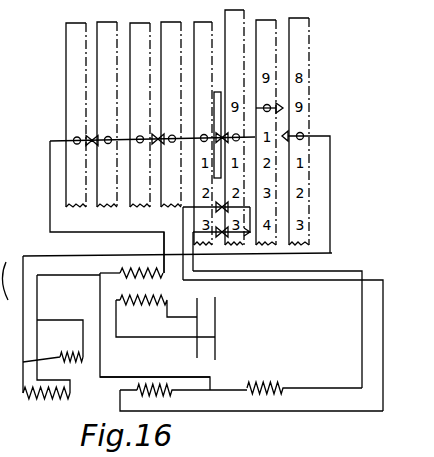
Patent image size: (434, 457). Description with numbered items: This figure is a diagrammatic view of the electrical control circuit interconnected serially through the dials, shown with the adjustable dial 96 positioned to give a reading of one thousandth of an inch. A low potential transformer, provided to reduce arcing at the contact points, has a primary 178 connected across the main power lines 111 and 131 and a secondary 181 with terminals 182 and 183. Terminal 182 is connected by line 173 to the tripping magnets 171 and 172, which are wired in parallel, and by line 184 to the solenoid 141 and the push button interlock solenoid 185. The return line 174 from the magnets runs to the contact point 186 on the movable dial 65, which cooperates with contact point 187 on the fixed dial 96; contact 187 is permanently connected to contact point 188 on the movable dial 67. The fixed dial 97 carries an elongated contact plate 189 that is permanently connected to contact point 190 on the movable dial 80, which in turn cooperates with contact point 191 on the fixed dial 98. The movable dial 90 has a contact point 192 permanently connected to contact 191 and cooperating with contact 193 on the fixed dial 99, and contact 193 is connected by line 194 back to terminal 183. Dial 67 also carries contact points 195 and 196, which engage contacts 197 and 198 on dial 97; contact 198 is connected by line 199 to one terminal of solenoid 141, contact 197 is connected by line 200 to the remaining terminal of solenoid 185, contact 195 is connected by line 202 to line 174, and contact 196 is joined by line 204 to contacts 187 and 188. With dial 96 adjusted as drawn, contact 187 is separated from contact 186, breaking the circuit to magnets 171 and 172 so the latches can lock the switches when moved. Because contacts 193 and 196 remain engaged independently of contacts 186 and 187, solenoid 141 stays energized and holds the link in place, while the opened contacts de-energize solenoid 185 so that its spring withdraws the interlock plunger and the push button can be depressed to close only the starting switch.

The fixed dial 99 is at (77, 28).
The movable dial 90 is at (108, 28).
The fixed dial 98 is at (141, 28).
The movable dial 80 is at (173, 28).
The fixed dial 97 is at (204, 28).
The movable dial 67 is at (234, 17).
The fixed dial 96 is at (259, 26).
The movable dial 65 is at (306, 18).
The contact 193 is at (92, 137).
The contact point 192 is at (109, 136).
The contact point 191 is at (158, 136).
The contact point 190 is at (158, 142).
The elongated contact plate 189 is at (215, 113).
The contact point 188 is at (232, 134).
The contact point 187 is at (283, 107).
The contact point 186 is at (287, 133).
The line 194 is at (50, 179).
The contact 197 is at (215, 207).
The contact point 195 is at (224, 203).
The line 204 is at (251, 211).
The contact point 198 is at (220, 236).
The contact point 196 is at (228, 238).
The line 202 is at (252, 244).
The return line 174 is at (65, 256).
The terminal 182 is at (100, 273).
The secondary 181 is at (140, 276).
The terminal 183 is at (165, 276).
The line 173 is at (38, 298).
The tripping magnet 171 is at (70, 354).
The tripping magnet 172 is at (65, 398).
The primary 178 is at (140, 302).
The main power line 131 is at (216, 310).
The main power line 111 is at (196, 348).
The line 184 is at (112, 377).
The push button interlock solenoid 185 is at (160, 396).
The solenoid 141 is at (282, 386).
The line 199 is at (362, 290).
The line 200 is at (383, 305).